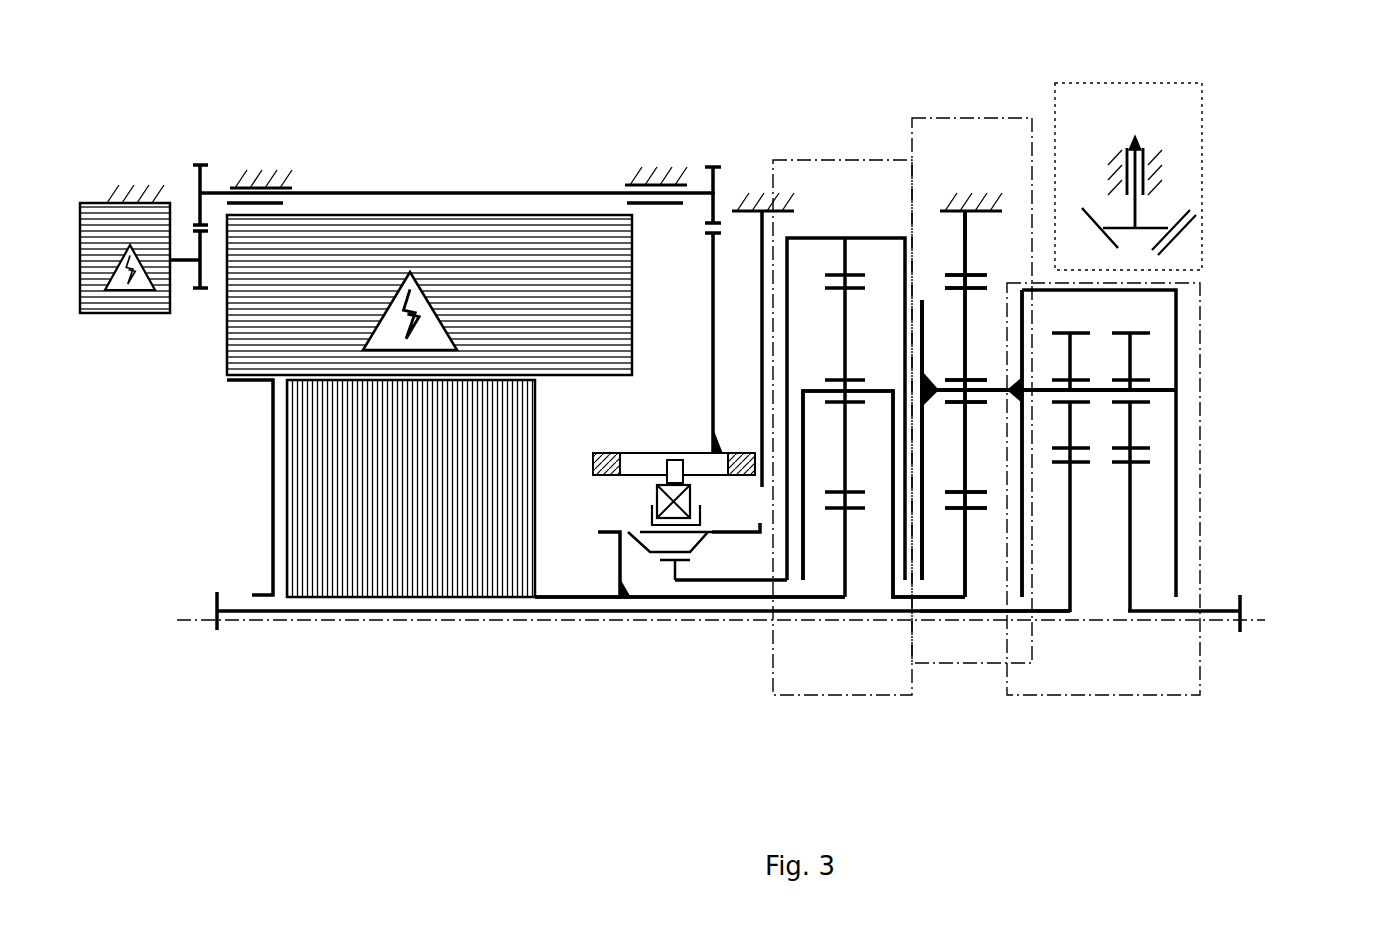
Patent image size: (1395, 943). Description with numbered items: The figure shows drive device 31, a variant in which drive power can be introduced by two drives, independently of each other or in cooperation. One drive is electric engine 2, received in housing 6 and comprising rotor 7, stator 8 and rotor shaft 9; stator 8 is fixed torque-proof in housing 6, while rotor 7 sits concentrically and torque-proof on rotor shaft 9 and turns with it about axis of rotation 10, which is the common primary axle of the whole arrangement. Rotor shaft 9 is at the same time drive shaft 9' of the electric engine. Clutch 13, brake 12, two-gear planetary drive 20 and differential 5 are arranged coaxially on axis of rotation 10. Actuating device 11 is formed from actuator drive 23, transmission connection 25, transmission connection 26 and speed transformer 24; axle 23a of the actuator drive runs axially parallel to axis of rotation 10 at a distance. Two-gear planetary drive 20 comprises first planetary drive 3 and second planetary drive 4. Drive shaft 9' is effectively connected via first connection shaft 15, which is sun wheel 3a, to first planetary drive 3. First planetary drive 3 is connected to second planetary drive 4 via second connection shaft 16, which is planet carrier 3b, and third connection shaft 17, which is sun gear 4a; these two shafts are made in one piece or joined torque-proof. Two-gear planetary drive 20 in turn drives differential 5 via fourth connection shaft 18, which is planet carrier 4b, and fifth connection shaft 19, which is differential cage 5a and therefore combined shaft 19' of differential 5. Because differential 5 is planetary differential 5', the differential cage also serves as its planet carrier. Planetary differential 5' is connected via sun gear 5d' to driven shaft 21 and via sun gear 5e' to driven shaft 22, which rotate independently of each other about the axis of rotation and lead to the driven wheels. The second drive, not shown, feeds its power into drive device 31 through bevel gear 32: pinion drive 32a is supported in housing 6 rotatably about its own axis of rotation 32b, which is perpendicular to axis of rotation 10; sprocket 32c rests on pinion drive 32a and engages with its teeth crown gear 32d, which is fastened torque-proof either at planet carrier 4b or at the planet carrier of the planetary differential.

The electric engine 2 is at (340, 307).
The first planetary drive 3 is at (775, 165).
The sun wheel 3a is at (843, 568).
The planet carrier 3b is at (885, 585).
The second planetary drive 4 is at (915, 120).
The sun gear 4a is at (970, 587).
The planet carrier 4b is at (1023, 482).
The differential 5 is at (1146, 464).
The planetary differential 5' is at (1151, 443).
The differential cage 5a is at (1176, 428).
The sun gear 5d' is at (1181, 507).
The sun gear 5e' is at (1211, 507).
The housing 6 is at (262, 170).
The rotor 7 is at (345, 515).
The stator 8 is at (258, 325).
The rotor shaft 9 is at (639, 680).
The drive shaft 9' is at (639, 680).
The axis of rotation 10 is at (185, 620).
The actuating device 11 is at (478, 180).
The brake 12 is at (712, 553).
The clutch 13 is at (647, 553).
The first connection shaft 15 is at (803, 600).
The second connection shaft 16 is at (885, 585).
The third connection shaft 17 is at (970, 587).
The fourth connection shaft 18 is at (1023, 482).
The fifth connection shaft 19 is at (1152, 440).
The combined shaft 19' is at (1152, 440).
The two-gear planetary drive 20 is at (977, 105).
The driven shaft 21 is at (1063, 612).
The driven shaft 22 is at (1185, 613).
The actuator drive 23 is at (108, 312).
The axle 23a is at (188, 262).
The speed transformer 24 is at (715, 463).
The transmission connection 25 is at (722, 225).
The transmission connection 26 is at (197, 222).
The drive device 31 is at (1135, 58).
The bevel gear 32 is at (1205, 85).
The pinion drive 32a is at (1140, 137).
The axis of rotation 32b is at (1140, 137).
The sprocket 32c is at (1184, 209).
The crown gear 32d is at (1186, 258).